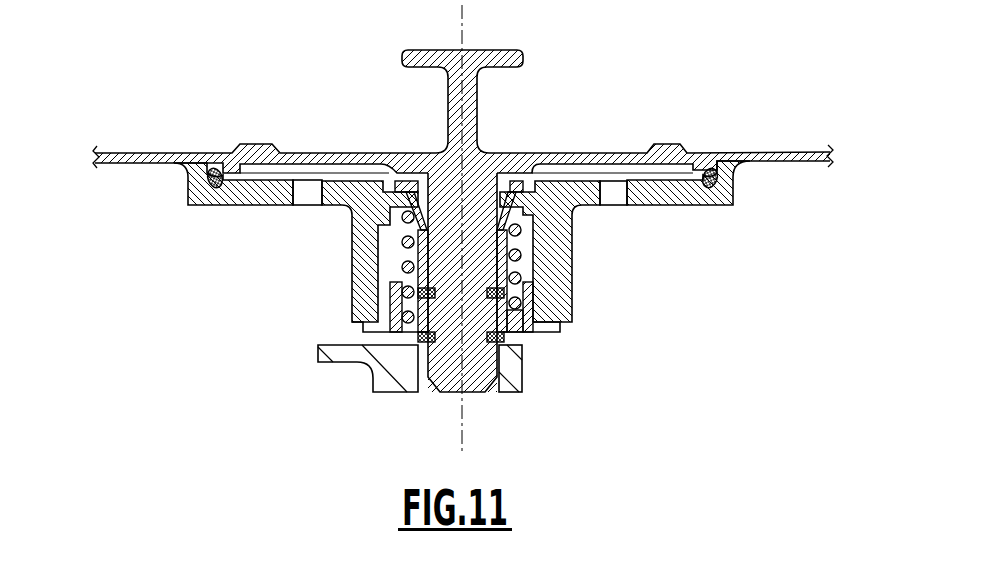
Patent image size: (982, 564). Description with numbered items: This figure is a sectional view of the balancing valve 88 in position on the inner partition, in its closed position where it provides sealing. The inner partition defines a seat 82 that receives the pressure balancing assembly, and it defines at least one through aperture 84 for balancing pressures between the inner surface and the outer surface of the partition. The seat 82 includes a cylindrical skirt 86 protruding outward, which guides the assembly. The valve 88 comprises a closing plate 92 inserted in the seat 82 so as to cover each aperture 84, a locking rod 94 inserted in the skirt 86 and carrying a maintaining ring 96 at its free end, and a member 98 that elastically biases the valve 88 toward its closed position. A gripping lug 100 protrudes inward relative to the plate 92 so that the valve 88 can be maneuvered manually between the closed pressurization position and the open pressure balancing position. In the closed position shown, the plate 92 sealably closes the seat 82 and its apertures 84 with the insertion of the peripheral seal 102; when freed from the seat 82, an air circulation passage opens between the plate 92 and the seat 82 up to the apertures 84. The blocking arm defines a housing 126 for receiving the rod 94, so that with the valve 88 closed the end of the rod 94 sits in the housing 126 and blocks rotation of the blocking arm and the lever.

The balancing valve 88 is at (316, 88).
The seat 82 is at (262, 195).
The through aperture 84 is at (301, 195).
The cylindrical skirt 86 is at (363, 256).
The closing plate 92 is at (574, 151).
The locking rod 94 is at (476, 247).
The maintaining ring 96 is at (530, 334).
The elastic biasing member 98 is at (405, 292).
The gripping lug 100 is at (492, 49).
The peripheral seal 102 is at (709, 190).
The housing 126 is at (500, 362).